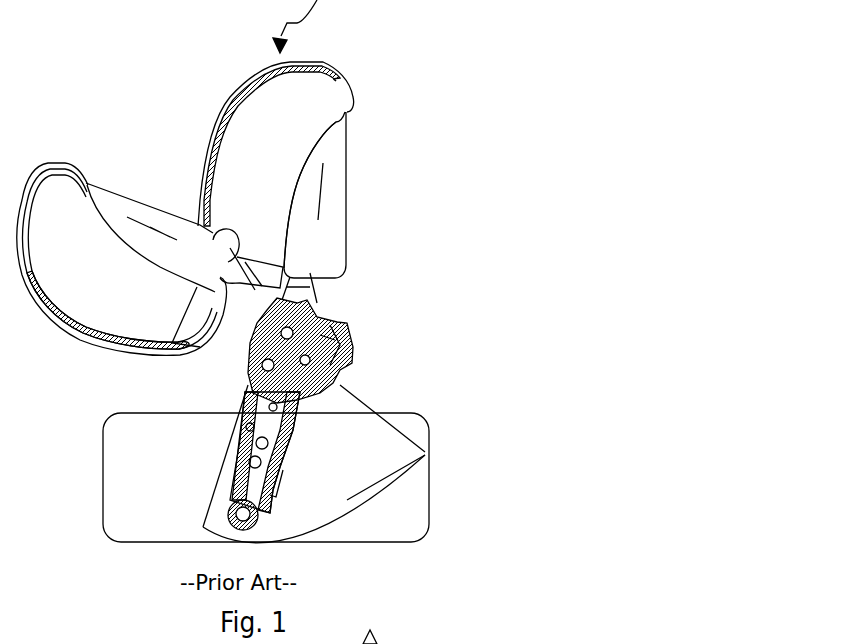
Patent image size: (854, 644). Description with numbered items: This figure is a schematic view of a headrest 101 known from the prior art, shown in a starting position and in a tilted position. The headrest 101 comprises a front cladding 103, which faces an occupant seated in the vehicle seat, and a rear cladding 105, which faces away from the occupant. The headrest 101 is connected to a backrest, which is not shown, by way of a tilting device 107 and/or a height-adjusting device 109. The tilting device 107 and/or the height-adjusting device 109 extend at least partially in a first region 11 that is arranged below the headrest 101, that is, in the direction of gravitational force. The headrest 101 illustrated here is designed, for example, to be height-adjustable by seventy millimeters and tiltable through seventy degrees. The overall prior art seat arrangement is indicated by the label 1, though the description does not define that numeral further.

The prior art vehicle seat 1 is at (52, 130).
The headrest 101 is at (392, 62).
The front cladding 103 is at (197, 162).
The rear cladding 105 is at (347, 170).
The tilting device 107 is at (363, 343).
The height-adjusting device 109 is at (400, 427).
The first region 11 is at (429, 493).